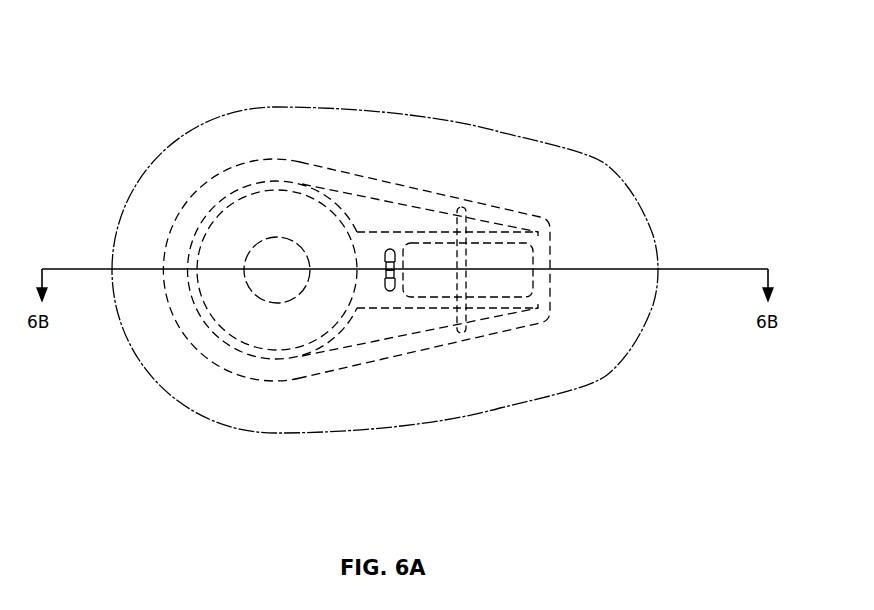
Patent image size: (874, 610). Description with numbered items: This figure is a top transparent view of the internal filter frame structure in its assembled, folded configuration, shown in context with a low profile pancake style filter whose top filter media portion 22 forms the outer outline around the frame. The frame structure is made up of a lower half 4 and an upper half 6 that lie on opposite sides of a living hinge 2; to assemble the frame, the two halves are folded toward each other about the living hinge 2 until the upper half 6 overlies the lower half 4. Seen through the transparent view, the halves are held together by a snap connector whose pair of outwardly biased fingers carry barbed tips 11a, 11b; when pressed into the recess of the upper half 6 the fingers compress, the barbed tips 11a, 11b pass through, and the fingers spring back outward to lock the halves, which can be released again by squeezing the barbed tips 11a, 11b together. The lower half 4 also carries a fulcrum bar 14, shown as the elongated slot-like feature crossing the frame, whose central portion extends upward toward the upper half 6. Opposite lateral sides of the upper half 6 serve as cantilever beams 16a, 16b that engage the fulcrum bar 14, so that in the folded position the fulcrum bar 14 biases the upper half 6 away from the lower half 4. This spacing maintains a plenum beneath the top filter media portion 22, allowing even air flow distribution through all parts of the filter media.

The living hinge 2 is at (551, 262).
The lower half 4 is at (215, 357).
The upper half 6 is at (220, 211).
The barbed tip 11a is at (388, 252).
The barbed tip 11b is at (390, 285).
The fulcrum bar 14 is at (465, 260).
The cantilever beam 16a is at (443, 237).
The cantilever beam 16b is at (478, 303).
The top filter media portion 22 is at (503, 147).